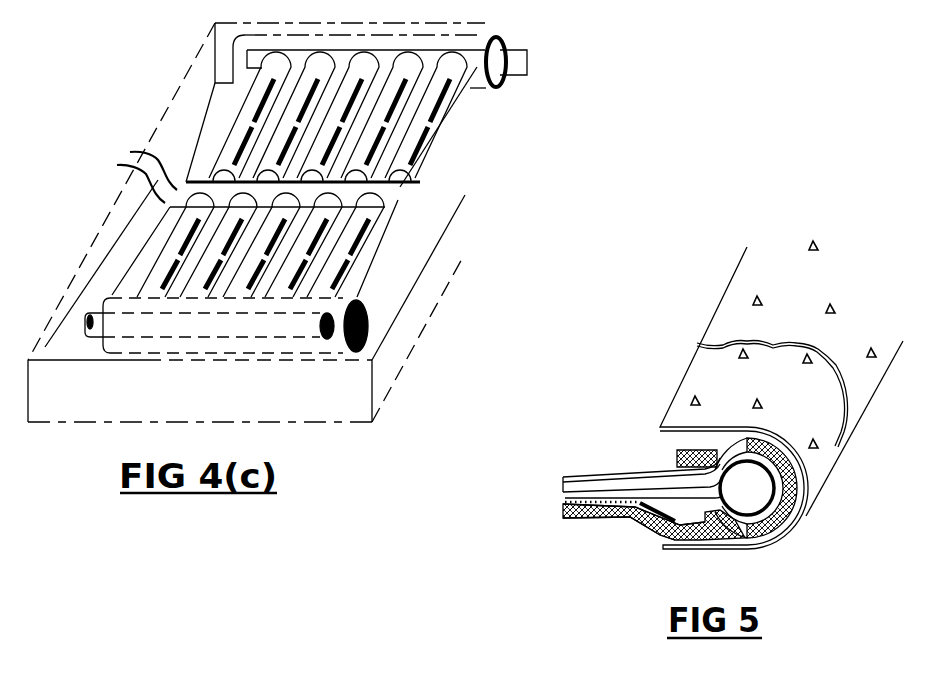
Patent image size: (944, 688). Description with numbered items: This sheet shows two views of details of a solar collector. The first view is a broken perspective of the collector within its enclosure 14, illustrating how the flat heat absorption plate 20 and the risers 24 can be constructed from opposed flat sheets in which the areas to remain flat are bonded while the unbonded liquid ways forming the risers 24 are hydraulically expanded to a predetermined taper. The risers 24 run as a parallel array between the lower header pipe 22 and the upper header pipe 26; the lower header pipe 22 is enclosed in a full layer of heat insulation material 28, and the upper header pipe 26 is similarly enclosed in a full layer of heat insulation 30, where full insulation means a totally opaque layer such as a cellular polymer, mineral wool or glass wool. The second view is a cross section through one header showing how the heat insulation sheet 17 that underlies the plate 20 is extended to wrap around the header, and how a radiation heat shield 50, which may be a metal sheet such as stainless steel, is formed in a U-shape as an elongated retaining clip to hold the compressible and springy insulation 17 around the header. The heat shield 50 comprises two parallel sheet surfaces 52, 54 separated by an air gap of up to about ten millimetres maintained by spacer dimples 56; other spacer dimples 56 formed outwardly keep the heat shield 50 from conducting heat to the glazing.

The enclosure 14 is at (155, 132).
The flat heat absorption plate 20 is at (433, 140).
In FIG. 5, the flat heat absorption plate 20 is at (565, 502).
The lower header pipe 22 is at (88, 313).
The risers 24 is at (380, 198).
In FIG. 5, the risers 24 is at (613, 471).
The upper header pipe 26 is at (523, 75).
The heat insulation material 28 is at (170, 354).
The heat insulation 30 is at (503, 42).
In FIG. 5, the radiation heat shield 50 is at (723, 293).
In FIG. 5, the sheet surface 52 is at (697, 343).
In FIG. 5, the sheet surface 54 is at (677, 399).
In FIG. 5, the spacer dimples 56 is at (757, 403).
In FIG. 5, the heat insulation sheet 17 is at (627, 532).